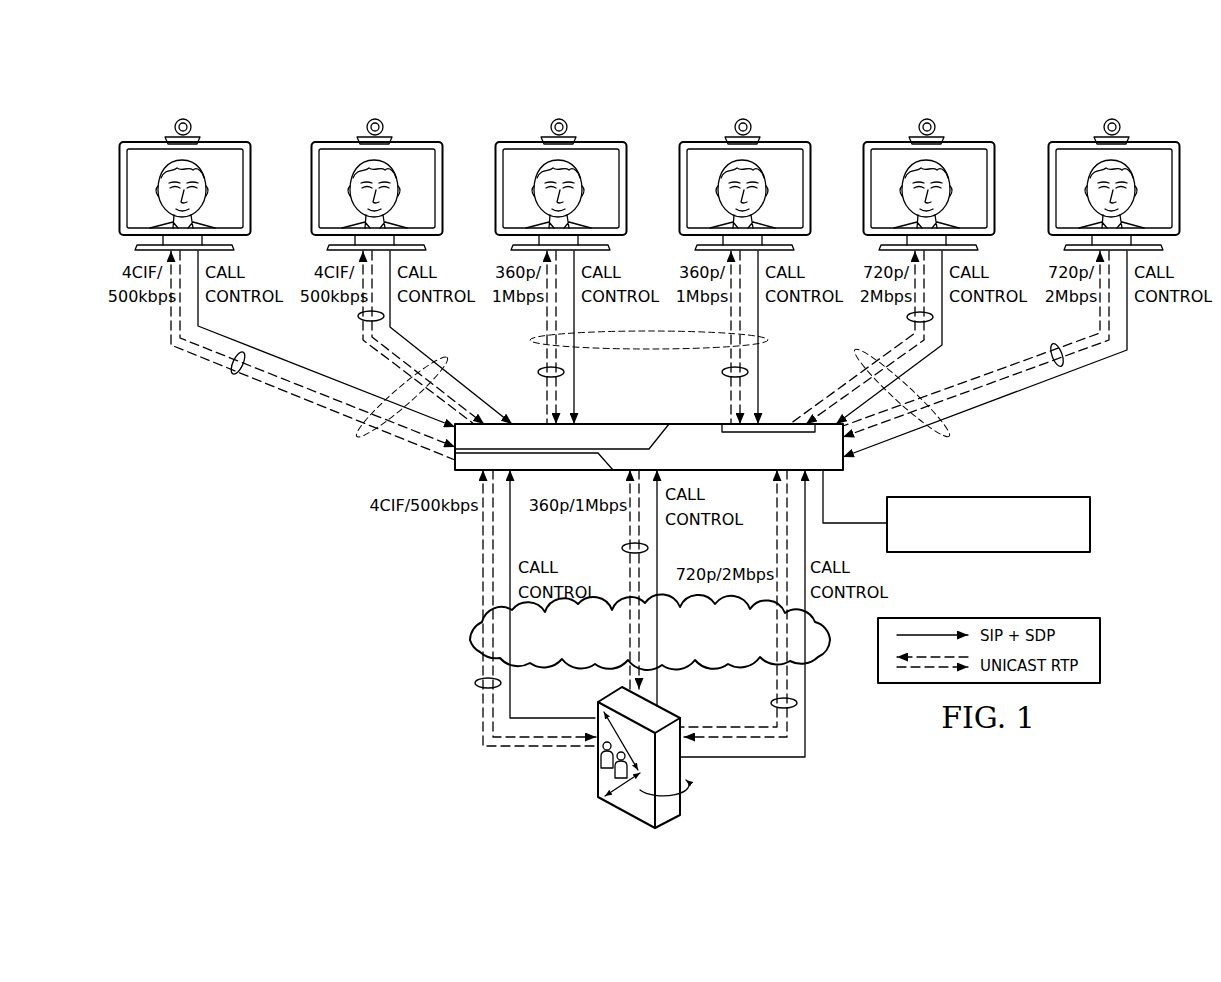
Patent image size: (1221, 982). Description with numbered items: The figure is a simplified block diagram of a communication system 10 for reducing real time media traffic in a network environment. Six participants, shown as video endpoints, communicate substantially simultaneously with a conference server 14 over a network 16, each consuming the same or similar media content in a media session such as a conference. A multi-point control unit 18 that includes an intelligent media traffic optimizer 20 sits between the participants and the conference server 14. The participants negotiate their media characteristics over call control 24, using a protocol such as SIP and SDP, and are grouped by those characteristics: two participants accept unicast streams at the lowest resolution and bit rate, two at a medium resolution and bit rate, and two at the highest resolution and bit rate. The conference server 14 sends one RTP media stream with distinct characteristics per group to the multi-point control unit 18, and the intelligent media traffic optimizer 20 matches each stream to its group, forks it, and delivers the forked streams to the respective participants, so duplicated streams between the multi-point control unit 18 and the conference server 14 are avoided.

The communication system 10 is at (352, 572).
The conference server 14 is at (596, 757).
The network 16 is at (470, 640).
The multi-point control unit 18 is at (707, 459).
The intelligent media traffic optimizer 20 is at (990, 553).
The call control 24 is at (566, 718).